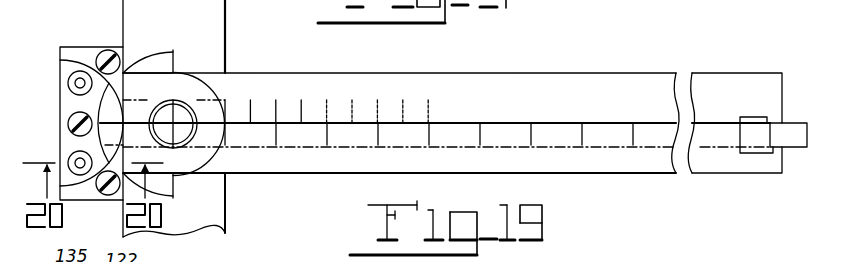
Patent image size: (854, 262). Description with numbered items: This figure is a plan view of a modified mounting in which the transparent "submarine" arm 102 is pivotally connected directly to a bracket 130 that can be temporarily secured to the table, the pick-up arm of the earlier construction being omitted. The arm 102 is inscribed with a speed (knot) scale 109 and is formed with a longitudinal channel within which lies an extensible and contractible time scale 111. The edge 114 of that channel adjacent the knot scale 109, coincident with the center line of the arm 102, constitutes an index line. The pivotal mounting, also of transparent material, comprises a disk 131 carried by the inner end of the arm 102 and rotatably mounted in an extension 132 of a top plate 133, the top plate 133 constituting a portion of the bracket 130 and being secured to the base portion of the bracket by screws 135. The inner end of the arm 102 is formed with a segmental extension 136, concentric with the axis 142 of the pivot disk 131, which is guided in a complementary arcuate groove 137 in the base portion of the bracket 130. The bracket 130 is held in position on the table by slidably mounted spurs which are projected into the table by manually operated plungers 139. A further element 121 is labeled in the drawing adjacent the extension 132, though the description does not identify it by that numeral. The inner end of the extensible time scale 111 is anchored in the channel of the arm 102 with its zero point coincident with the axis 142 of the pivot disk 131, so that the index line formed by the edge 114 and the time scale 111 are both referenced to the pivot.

The submarine arm 102 is at (723, 72).
The speed (knot) scale 109 is at (362, 87).
The extensible and contractible time scale 111 is at (613, 140).
The edge of the channel 114 is at (557, 122).
The plate edge 121 is at (228, 26).
The bracket 130 is at (83, 50).
The disk 131 is at (180, 110).
The extension of top plate 132 is at (197, 83).
The top plate 133 is at (132, 78).
The screws 135 is at (107, 52).
The segmental extension 136 is at (165, 57).
The arcuate groove 137 is at (102, 102).
The manually operated plungers 139 is at (70, 80).
The axis of the pivot 142 is at (173, 122).